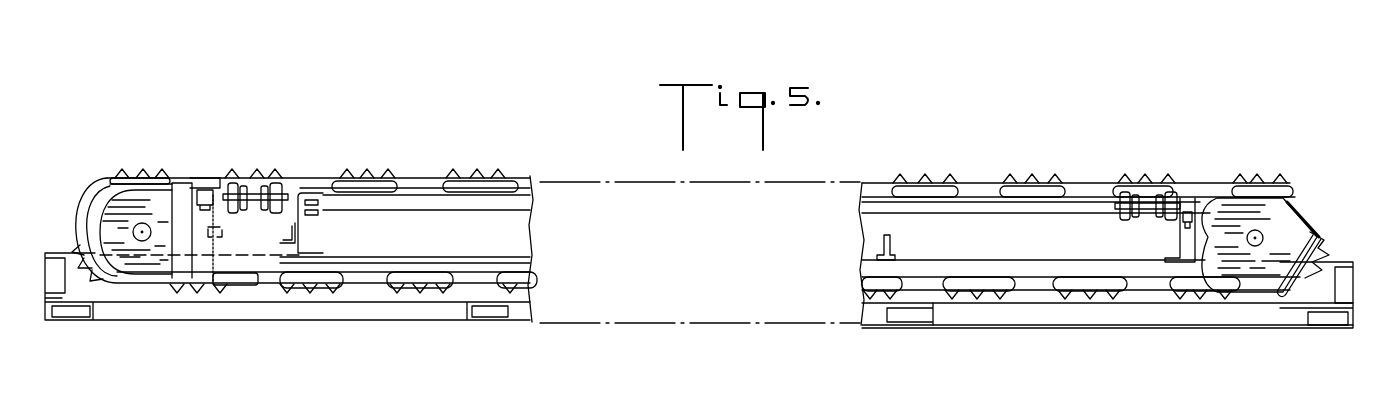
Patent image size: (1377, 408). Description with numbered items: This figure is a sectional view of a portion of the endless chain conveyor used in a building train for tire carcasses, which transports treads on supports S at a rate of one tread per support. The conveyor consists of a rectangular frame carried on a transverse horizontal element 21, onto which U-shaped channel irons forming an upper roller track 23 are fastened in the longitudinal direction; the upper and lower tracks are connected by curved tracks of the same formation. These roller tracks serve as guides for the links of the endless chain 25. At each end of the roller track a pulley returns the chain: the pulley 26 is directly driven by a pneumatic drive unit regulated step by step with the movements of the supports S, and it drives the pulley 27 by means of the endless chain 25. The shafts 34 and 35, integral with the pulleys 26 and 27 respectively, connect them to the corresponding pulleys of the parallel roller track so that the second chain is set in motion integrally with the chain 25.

The transverse horizontal element 21 is at (293, 188).
The upper roller track 23 is at (415, 200).
The endless chain 25 is at (982, 188).
The pulley 26 is at (1207, 198).
The pulley 27 is at (112, 207).
The shaft 34 is at (1263, 236).
The shaft 35 is at (143, 242).
The support S is at (1034, 178).